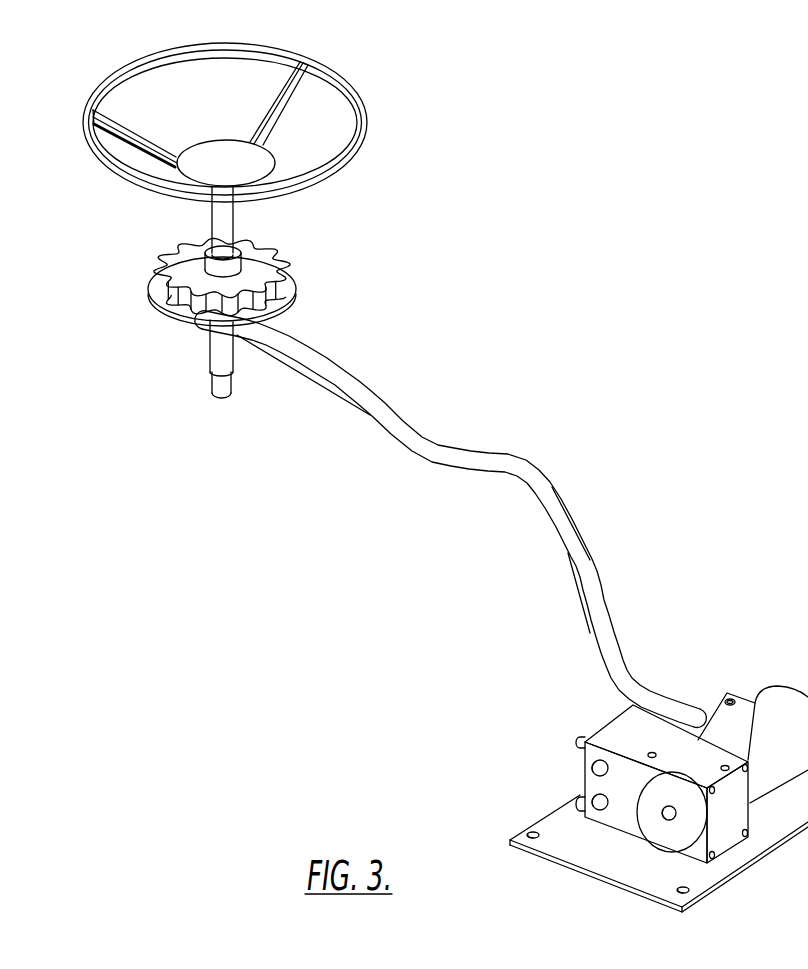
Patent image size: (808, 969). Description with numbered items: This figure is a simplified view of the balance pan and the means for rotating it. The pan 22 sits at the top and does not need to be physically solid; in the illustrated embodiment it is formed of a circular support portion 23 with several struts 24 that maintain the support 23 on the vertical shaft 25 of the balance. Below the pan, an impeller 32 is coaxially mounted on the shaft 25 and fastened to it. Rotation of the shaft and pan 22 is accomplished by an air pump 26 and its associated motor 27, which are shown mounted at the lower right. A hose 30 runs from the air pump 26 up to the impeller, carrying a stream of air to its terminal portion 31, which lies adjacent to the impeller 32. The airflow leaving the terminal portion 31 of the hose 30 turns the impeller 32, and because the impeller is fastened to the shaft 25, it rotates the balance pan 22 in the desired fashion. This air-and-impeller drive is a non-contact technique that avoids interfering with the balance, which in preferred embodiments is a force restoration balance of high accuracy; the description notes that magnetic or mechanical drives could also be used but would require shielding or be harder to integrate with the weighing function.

The pan 22 is at (277, 122).
The circular support portion 23 is at (363, 147).
The struts 24 is at (268, 108).
The vertical shaft 25 is at (218, 220).
The impeller 32 is at (258, 268).
The terminal portion 31 is at (208, 327).
The hose 30 is at (425, 442).
The air pump 26 is at (618, 742).
The motor 27 is at (783, 739).